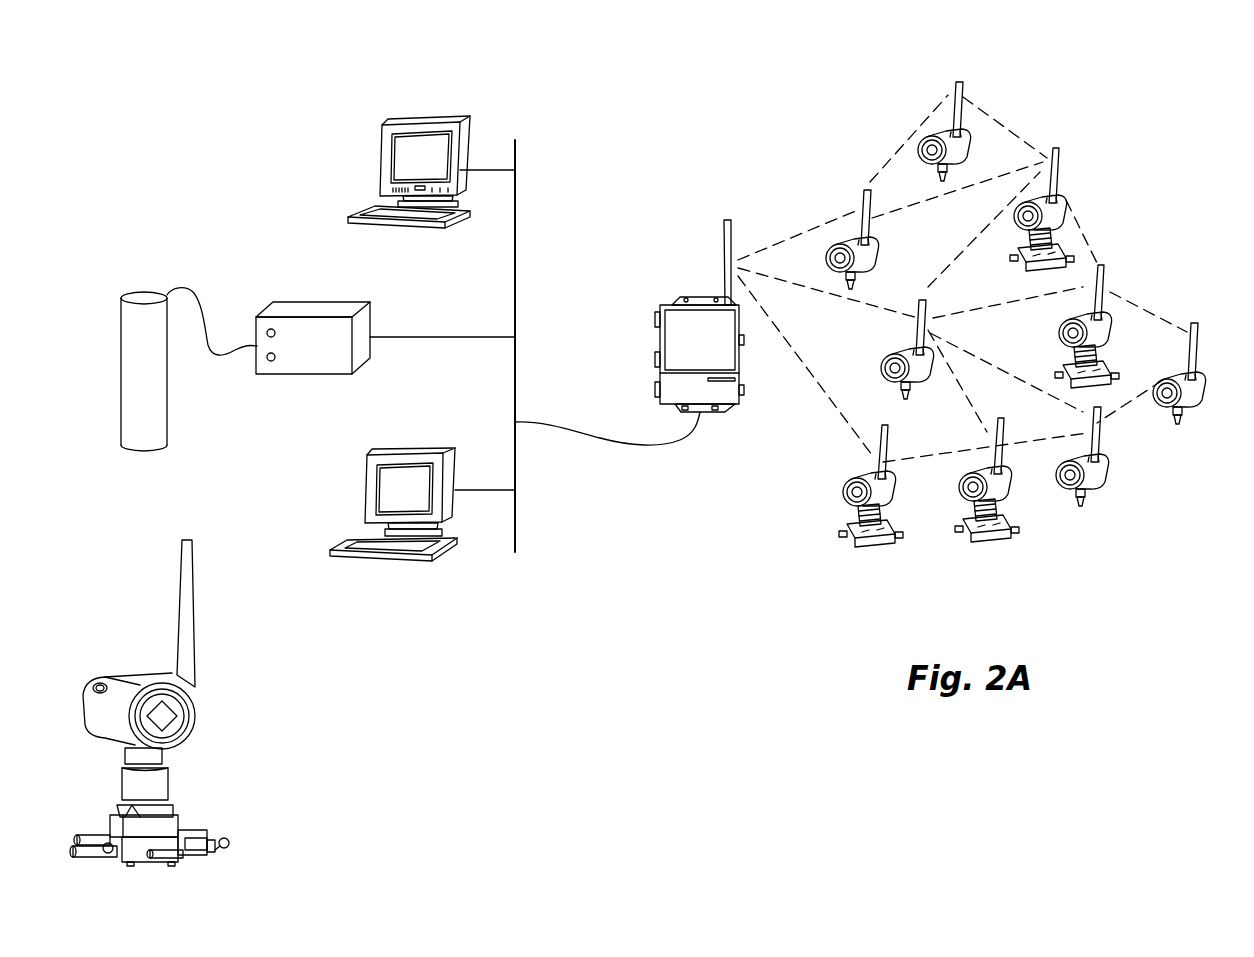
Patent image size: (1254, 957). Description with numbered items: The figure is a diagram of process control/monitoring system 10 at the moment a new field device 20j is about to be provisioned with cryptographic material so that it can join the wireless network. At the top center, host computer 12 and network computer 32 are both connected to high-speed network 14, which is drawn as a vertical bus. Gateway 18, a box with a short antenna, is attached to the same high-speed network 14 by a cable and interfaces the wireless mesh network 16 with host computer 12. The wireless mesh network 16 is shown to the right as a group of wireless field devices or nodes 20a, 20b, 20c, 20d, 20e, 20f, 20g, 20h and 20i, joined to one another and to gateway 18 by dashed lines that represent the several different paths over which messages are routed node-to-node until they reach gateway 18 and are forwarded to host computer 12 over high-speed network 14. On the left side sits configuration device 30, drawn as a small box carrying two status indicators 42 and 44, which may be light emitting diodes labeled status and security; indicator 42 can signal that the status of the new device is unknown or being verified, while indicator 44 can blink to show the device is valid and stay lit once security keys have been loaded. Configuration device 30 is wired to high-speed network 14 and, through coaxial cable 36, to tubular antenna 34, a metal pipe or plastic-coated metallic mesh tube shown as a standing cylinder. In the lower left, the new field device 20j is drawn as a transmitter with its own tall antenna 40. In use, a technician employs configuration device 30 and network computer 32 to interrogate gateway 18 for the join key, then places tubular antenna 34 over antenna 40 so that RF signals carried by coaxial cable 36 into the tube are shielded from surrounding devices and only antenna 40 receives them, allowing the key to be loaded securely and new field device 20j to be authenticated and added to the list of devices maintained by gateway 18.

The process control/monitoring system 10 is at (233, 211).
The host computer 12 is at (381, 156).
The high-speed network 14 is at (515, 205).
The wireless mesh network 16 is at (798, 511).
The gateway 18 is at (658, 342).
The wireless field device 20a is at (877, 262).
The wireless field device 20b is at (925, 377).
The wireless field device 20c is at (887, 493).
The wireless field device 20d is at (960, 148).
The wireless field device 20e is at (1003, 488).
The wireless field device 20f is at (1068, 208).
The wireless field device 20g is at (1108, 338).
The wireless field device 20h is at (1093, 478).
The wireless field device 20i is at (1193, 395).
The new field device 20j is at (183, 703).
The configuration device 30 is at (309, 300).
The network computer 32 is at (359, 522).
The tubular antenna 34 is at (138, 395).
The coaxial cable 36 is at (200, 323).
The antenna 40 is at (183, 616).
The status indicator 42 is at (269, 338).
The status indicator 44 is at (272, 362).